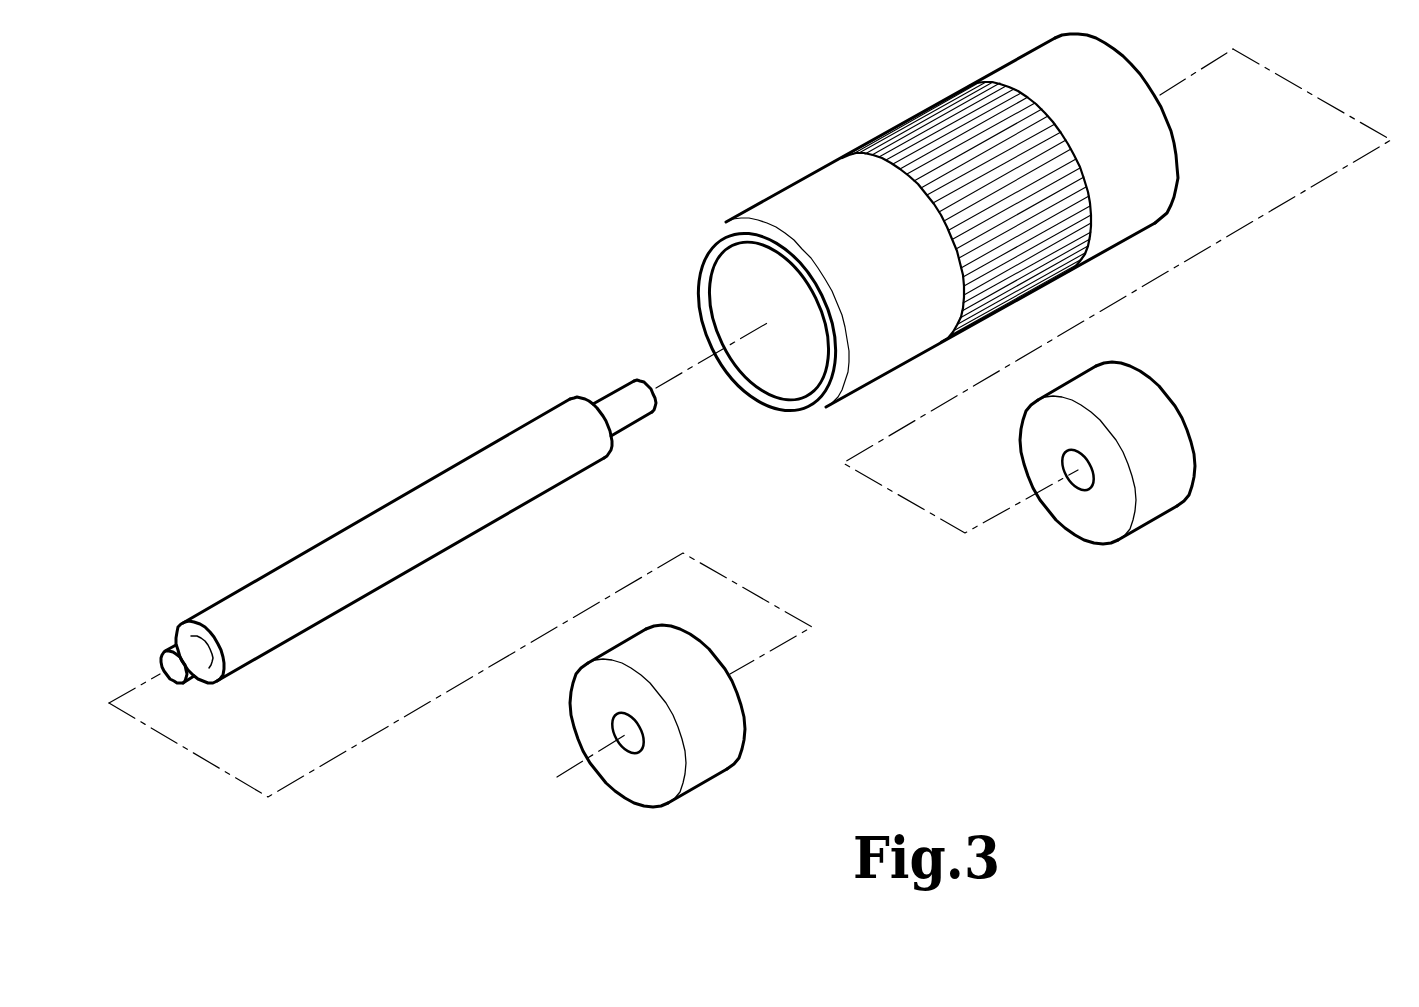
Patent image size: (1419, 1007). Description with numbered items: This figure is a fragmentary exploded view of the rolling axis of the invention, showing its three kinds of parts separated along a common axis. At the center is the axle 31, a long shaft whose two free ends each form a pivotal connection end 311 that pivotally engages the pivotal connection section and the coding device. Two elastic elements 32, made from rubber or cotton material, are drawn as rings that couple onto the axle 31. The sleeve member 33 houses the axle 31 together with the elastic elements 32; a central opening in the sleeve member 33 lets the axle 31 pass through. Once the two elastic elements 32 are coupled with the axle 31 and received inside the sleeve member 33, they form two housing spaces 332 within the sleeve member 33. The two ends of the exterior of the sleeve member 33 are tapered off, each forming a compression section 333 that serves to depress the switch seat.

The axle 31 is at (408, 497).
The pivotal connection end 311 is at (620, 403).
The elastic element 32 is at (1168, 528).
The sleeve member 33 is at (965, 233).
The housing space 332 is at (748, 268).
The compression section 333 is at (1098, 205).